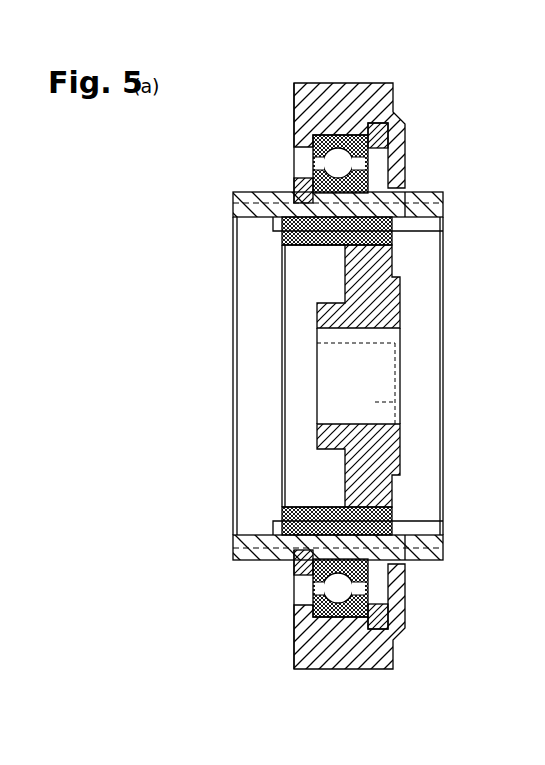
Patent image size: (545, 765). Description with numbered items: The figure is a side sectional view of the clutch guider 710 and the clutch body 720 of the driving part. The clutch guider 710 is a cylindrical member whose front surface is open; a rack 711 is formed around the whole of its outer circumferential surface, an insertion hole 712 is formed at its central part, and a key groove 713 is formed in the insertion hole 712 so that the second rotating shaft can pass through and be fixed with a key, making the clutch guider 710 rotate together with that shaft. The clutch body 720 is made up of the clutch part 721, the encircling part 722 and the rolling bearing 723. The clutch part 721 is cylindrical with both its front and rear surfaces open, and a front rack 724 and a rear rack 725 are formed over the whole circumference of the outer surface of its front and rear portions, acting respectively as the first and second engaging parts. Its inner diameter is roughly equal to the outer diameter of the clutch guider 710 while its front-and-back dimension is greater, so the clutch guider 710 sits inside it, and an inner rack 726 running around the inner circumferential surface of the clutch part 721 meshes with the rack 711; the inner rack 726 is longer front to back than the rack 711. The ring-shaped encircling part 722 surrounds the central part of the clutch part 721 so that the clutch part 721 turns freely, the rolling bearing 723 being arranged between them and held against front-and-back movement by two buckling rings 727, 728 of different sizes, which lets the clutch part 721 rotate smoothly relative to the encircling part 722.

The clutch guider 710 is at (408, 316).
The rack 711 is at (308, 246).
The insertion hole 712 is at (375, 402).
The key groove 713 is at (395, 357).
The clutch body 720 is at (413, 163).
The clutch part 721 is at (233, 254).
The encircling part 722 is at (294, 127).
The rolling bearing 723 is at (338, 135).
The front rack 724 is at (246, 193).
The rear rack 725 is at (440, 192).
The inner rack 726 is at (445, 218).
The buckling ring 727 is at (370, 124).
The buckling ring 728 is at (296, 178).